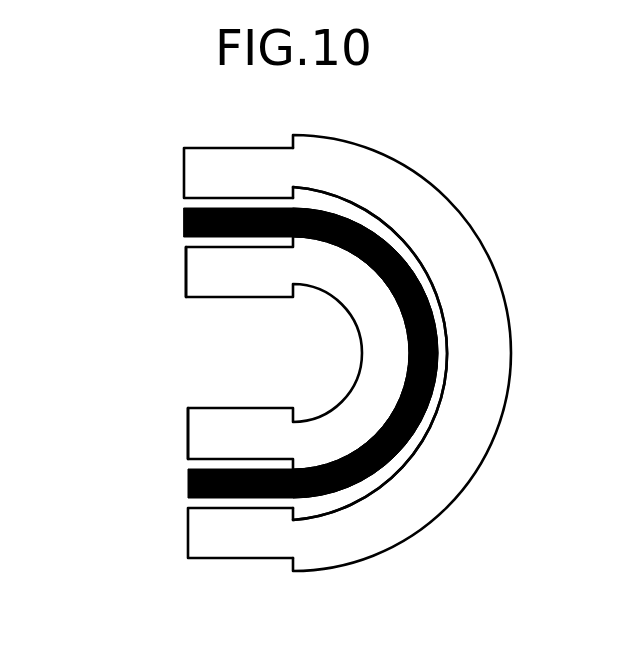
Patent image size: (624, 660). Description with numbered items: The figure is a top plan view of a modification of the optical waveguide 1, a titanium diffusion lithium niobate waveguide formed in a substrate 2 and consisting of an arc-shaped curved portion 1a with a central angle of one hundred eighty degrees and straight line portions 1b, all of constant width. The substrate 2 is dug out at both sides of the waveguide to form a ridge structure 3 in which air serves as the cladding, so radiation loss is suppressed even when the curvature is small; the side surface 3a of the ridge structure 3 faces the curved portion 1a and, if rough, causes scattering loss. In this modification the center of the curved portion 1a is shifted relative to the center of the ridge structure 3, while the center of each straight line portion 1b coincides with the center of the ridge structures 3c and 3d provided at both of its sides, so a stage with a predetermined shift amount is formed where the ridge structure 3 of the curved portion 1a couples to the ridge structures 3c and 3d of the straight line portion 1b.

The optical waveguide 1 is at (156, 202).
The curved portion 1a is at (433, 320).
The straight line portion 1b is at (184, 222).
The substrate 2 is at (112, 366).
The ridge structure 3 is at (485, 395).
The side surface 3a is at (347, 453).
The ridge structure 3c is at (255, 284).
The ridge structure 3d is at (223, 162).